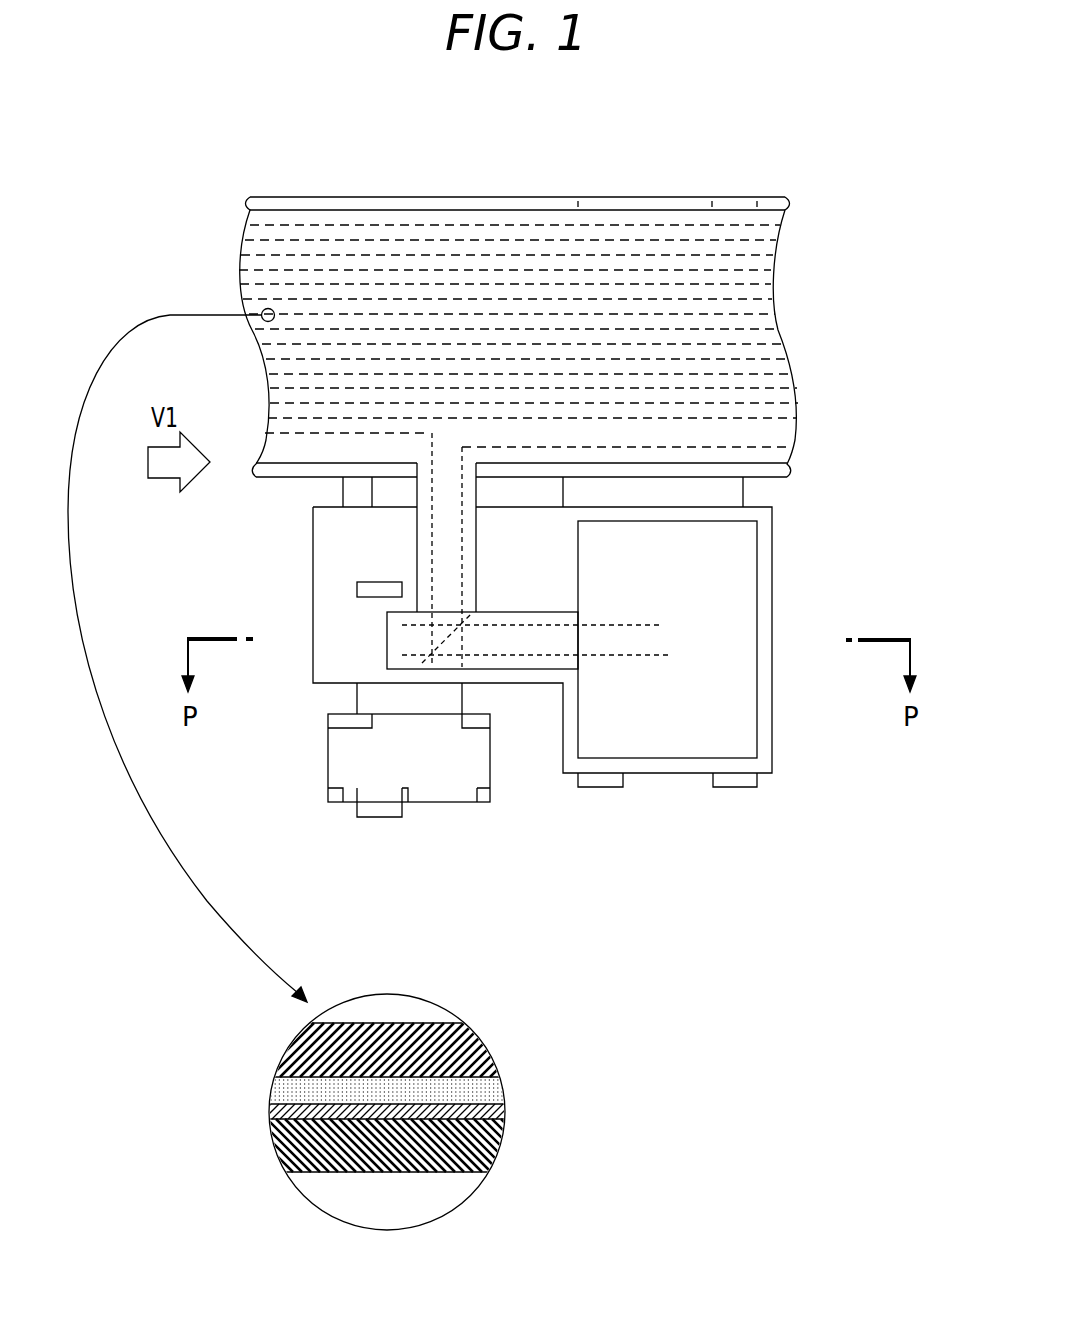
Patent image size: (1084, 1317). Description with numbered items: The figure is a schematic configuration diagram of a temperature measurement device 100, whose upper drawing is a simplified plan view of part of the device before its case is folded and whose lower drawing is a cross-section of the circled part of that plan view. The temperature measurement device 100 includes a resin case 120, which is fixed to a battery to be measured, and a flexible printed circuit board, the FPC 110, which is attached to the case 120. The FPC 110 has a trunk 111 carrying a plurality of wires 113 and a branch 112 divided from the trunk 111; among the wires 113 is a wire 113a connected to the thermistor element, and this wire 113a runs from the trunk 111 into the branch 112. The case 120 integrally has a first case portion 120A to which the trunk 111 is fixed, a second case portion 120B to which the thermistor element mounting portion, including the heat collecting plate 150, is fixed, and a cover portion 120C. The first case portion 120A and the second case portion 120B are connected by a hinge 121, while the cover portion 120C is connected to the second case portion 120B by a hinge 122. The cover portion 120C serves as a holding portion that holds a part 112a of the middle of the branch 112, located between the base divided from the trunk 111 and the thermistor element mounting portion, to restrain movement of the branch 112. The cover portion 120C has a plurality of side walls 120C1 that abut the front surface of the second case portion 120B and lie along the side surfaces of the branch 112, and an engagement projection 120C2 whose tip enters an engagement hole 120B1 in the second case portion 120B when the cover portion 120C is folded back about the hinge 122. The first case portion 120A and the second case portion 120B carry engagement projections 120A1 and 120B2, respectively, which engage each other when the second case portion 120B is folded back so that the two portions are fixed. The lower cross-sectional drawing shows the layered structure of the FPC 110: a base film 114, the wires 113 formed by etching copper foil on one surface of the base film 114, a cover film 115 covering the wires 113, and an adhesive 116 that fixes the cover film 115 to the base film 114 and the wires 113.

The temperature measurement device 100 is at (788, 170).
The flexible printed circuit board (FPC) 110 is at (788, 298).
The trunk 111 is at (743, 433).
The branch 112 is at (446, 552).
The part of the middle of the branch 112a is at (438, 633).
The wires 113 is at (285, 253).
The wire connected to the thermistor element 113a is at (663, 625).
The base film 114 is at (460, 1167).
The cover film 115 is at (460, 1042).
The adhesive 116 is at (490, 1090).
The case 120 is at (283, 515).
The first case portion 120A is at (327, 197).
The engagement projection 120A1 is at (613, 193).
The second case portion 120B is at (327, 563).
The engagement hole 120B1 is at (378, 589).
The engagement projection 120B2 is at (742, 787).
The cover portion 120C is at (447, 782).
The side walls 120C1 is at (350, 722).
The engagement projection 120C2 is at (380, 810).
The hinge 121 is at (357, 486).
The hinge 122 is at (372, 700).
The heat collecting plate 150 is at (717, 695).